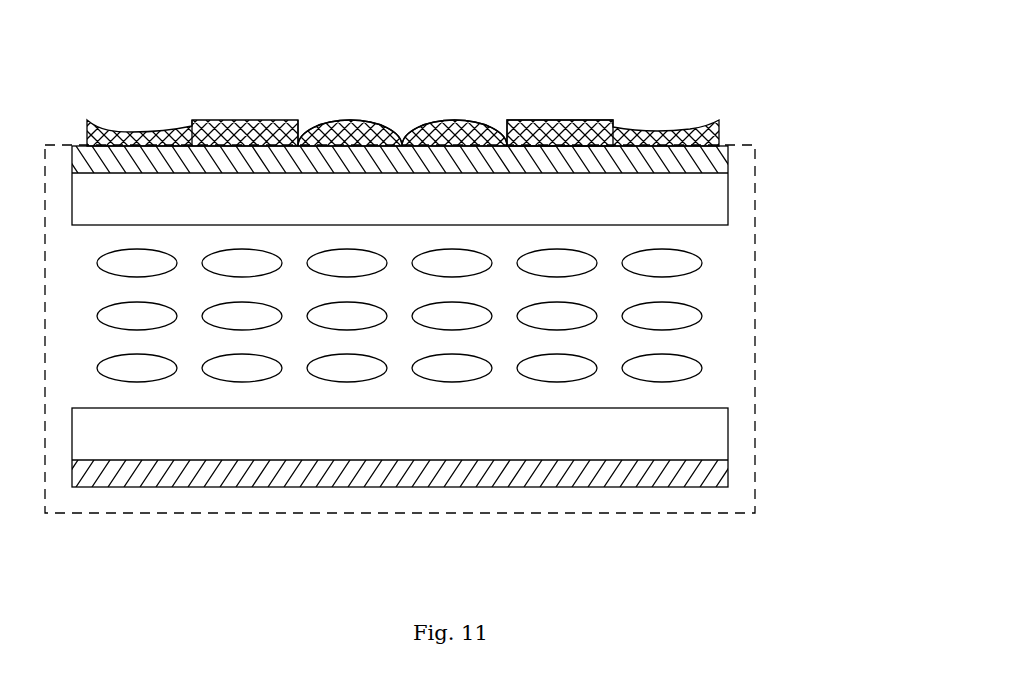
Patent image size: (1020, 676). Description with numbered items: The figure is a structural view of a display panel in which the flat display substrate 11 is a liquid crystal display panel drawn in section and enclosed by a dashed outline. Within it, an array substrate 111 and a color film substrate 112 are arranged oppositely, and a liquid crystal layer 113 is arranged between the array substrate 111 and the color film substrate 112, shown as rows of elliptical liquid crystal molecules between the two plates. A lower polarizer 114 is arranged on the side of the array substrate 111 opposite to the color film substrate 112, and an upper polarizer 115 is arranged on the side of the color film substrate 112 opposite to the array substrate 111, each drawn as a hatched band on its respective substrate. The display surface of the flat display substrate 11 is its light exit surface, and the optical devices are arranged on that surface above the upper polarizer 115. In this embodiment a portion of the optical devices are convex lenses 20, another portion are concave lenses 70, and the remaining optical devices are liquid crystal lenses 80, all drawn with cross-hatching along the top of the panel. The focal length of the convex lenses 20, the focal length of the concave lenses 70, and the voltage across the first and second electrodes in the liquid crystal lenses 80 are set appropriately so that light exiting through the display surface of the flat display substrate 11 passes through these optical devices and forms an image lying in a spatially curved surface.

The flat display substrate 11 is at (613, 514).
The color film substrate 112 is at (634, 190).
The upper polarizer 115 is at (229, 153).
The array substrate 111 is at (140, 450).
The lower polarizer 114 is at (308, 475).
The liquid crystal layer 113 is at (717, 328).
The concave lenses 70 is at (703, 124).
The convex lenses 20 is at (367, 122).
The liquid crystal lenses 80 is at (543, 128).